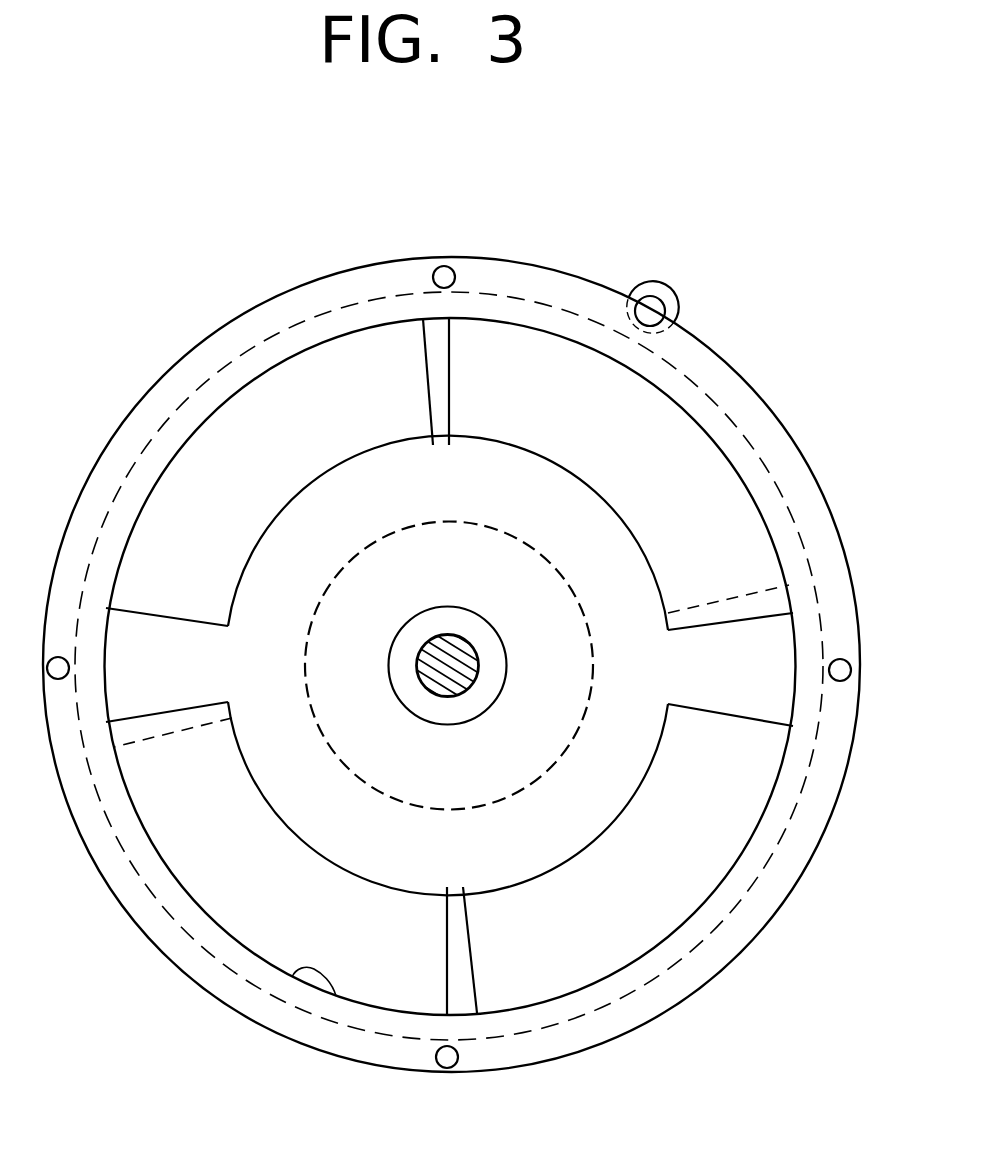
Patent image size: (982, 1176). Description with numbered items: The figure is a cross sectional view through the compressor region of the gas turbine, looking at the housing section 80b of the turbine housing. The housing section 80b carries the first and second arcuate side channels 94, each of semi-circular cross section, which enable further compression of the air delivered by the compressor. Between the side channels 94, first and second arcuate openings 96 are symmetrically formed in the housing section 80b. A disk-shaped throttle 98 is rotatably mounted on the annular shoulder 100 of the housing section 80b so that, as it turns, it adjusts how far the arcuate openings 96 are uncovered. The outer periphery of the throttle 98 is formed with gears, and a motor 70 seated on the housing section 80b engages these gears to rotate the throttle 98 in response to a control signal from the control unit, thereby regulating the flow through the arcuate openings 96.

The housing section 80b is at (260, 312).
The motor 70 is at (676, 302).
The arcuate side channel 94 is at (540, 332).
The arcuate opening 96 is at (252, 378).
The throttle 98 is at (436, 369).
The annular shoulder 100 is at (545, 553).